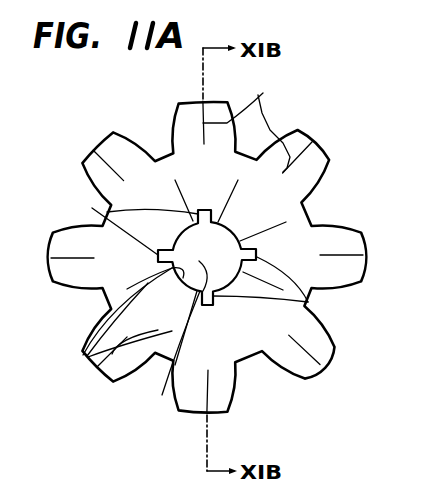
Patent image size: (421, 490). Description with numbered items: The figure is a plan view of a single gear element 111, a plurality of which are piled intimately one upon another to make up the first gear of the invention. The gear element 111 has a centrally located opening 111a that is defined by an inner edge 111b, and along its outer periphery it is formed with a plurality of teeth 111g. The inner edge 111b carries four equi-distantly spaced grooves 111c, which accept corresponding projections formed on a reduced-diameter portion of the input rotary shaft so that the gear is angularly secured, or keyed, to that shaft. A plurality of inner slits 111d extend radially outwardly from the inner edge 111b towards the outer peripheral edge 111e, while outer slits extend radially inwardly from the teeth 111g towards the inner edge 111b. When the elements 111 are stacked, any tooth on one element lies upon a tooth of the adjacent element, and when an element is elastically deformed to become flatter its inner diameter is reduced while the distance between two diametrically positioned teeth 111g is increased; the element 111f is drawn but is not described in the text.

The gear element 111 is at (74, 149).
The centrally located opening 111a is at (127, 397).
The inner edge 111b is at (104, 298).
The grooves 111c is at (107, 212).
The inner slits 111d is at (83, 355).
The outer peripheral edge 111e is at (163, 156).
The spring arm 111f is at (263, 93).
The teeth 111g is at (348, 226).